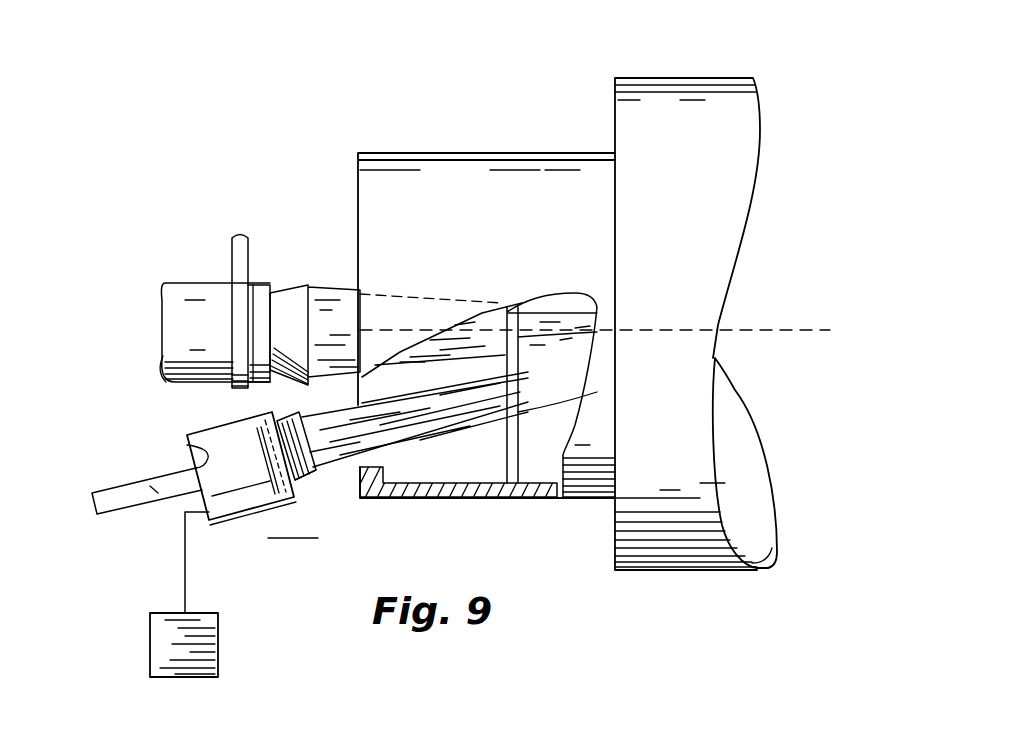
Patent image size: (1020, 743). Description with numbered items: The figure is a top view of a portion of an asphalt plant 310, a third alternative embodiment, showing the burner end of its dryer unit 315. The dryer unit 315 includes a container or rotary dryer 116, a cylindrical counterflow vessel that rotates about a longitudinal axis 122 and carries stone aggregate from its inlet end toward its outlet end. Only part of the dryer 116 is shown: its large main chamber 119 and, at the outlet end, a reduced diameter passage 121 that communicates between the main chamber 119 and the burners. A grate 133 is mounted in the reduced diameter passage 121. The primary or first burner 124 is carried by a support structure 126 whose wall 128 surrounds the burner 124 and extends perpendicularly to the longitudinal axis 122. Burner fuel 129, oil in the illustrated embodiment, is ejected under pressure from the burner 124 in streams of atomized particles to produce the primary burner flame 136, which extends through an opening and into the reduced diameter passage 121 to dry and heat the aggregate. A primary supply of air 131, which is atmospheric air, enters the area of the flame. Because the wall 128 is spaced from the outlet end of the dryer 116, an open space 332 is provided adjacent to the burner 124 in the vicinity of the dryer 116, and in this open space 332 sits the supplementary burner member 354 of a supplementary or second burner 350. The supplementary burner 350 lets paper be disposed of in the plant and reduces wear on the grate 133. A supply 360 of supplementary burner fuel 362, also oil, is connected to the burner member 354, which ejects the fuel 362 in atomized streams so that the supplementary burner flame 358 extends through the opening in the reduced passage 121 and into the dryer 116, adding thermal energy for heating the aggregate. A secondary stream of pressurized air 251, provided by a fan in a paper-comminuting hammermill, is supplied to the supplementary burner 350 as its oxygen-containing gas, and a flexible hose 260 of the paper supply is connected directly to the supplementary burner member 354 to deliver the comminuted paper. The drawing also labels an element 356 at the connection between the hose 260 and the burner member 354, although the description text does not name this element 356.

The asphalt plant 310 is at (470, 66).
The dryer unit 315 is at (320, 157).
The rotary dryer 116 is at (680, 548).
The main chamber 119 is at (747, 440).
The reduced diameter passage 121 is at (543, 499).
The longitudinal axis 122 is at (826, 288).
The burner 124 is at (164, 298).
The support structure 126 is at (240, 232).
The wall 128 is at (253, 248).
The burner fuel 129 is at (329, 279).
The primary supply of air 131 is at (294, 522).
The grate 133 is at (515, 410).
The primary burner flame 136 is at (430, 295).
The open space 332 is at (338, 402).
The supplementary burner 350 is at (213, 530).
The supplementary burner member 354 is at (262, 476).
The fiber end 356 is at (187, 445).
The supplementary burner flame 358 is at (398, 427).
The supply of supplementary burner fuel 360 is at (200, 640).
The supplementary burner fuel 362 is at (334, 470).
The flexible hose 260 is at (158, 493).
The secondary stream of pressurized air 251 is at (82, 507).